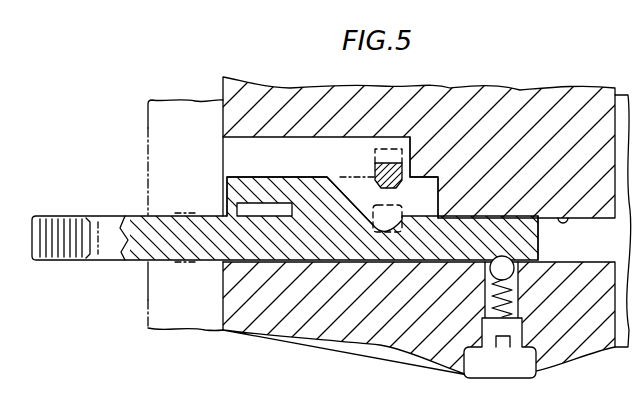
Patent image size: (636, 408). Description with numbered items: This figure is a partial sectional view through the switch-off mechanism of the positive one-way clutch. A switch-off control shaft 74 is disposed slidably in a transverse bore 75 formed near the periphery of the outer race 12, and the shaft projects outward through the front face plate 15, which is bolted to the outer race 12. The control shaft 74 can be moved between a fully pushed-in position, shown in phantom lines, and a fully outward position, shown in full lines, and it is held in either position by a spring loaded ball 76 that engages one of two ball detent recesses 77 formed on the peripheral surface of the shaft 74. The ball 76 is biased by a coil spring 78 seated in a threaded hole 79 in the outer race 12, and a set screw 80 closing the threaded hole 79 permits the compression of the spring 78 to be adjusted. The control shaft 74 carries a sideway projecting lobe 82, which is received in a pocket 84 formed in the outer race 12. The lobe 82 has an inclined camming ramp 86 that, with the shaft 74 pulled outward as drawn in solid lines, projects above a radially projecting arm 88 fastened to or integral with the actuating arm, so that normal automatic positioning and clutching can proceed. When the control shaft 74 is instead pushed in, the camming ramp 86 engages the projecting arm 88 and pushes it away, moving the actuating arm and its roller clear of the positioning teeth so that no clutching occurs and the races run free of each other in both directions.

The outer race 12 is at (566, 350).
The front face plate 15 is at (168, 108).
The switch-off control shaft 74 is at (128, 216).
The transverse bore 75 is at (556, 218).
The spring loaded ball 76 is at (516, 270).
The ball detent recesses 77 is at (490, 250).
The coil spring 78 is at (488, 306).
The threaded hole 79 is at (488, 281).
The set screw 80 is at (480, 336).
The sideway projecting lobe 82 is at (300, 190).
The pocket 84 is at (332, 142).
The inclined camming ramp 86 is at (348, 184).
The radially projecting arm 88 is at (424, 166).